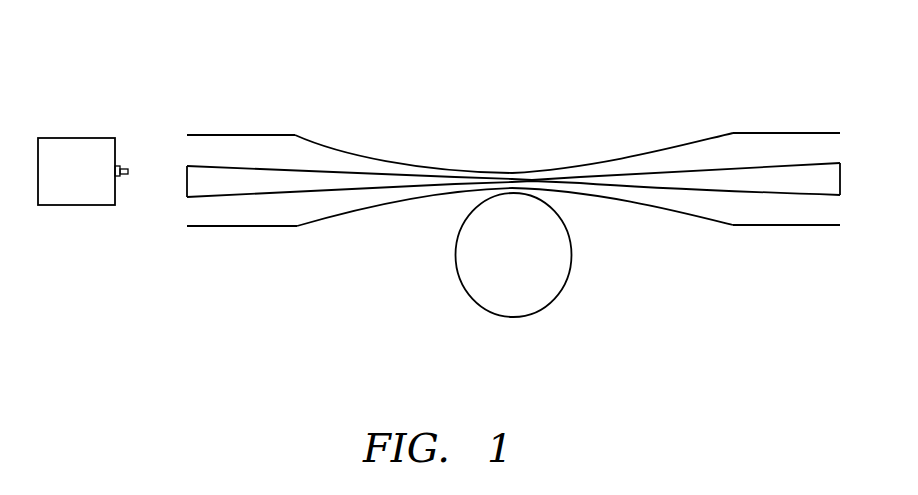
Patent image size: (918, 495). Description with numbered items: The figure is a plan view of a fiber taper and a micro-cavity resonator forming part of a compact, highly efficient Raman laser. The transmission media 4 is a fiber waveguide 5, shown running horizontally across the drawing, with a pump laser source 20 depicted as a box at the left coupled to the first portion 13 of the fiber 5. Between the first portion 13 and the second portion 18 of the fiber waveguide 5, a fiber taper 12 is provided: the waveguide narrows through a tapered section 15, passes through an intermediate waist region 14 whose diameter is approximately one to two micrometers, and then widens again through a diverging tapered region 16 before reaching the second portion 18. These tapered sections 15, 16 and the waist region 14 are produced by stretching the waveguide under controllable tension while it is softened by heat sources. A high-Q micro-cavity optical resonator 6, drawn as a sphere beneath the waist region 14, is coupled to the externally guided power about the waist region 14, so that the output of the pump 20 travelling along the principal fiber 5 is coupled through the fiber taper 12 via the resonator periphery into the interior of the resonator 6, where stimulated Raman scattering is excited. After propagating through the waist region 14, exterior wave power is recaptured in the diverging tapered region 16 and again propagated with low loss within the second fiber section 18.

The transmission media 4 is at (496, 160).
The fiber waveguide 5 is at (210, 133).
The high-Q micro-cavity optical resonator 6 is at (578, 287).
The fiber taper 12 is at (395, 233).
The first portion 13 is at (241, 227).
The waist region 14 is at (522, 172).
The tapered section 15 is at (344, 150).
The diverging tapered region 16 is at (673, 150).
The second portion 18 is at (808, 226).
The pump laser source 20 is at (77, 205).